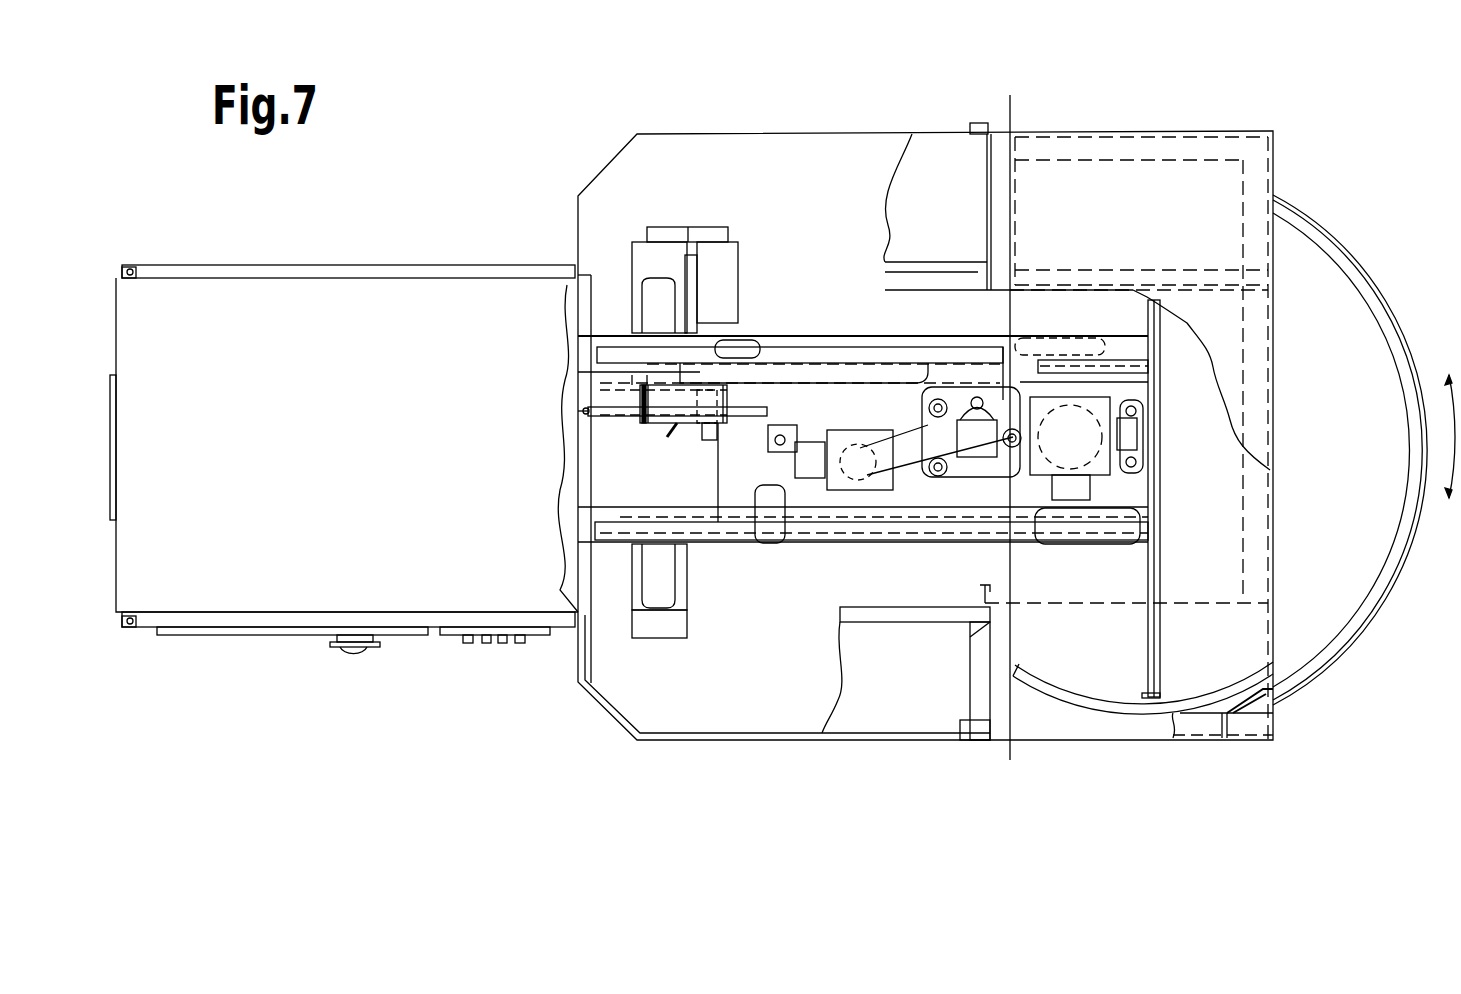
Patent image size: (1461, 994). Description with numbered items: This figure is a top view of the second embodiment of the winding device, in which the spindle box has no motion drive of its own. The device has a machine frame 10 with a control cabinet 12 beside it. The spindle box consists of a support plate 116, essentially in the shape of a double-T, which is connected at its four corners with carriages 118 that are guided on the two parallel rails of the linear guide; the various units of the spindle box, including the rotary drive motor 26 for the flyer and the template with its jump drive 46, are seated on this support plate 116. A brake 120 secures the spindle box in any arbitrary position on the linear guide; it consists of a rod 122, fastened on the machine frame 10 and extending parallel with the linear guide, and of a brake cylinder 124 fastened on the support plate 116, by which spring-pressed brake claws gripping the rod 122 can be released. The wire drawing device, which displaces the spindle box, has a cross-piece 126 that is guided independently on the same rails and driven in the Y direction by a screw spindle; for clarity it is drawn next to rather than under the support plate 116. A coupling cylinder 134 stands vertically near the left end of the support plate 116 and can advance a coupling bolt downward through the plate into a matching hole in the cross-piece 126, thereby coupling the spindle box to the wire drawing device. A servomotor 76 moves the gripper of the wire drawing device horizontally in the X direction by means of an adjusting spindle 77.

The machine frame 10 is at (632, 172).
The control cabinet 12 is at (252, 590).
The rotary drive motor 26 is at (1085, 448).
The jump drive 46 is at (868, 473).
The servomotor 76 is at (728, 262).
The adjusting spindle 77 is at (663, 573).
The support plate 116 is at (772, 480).
The carriages 118 is at (752, 340).
The brake 120 is at (678, 423).
The rod 122 is at (547, 442).
The brake cylinder 124 is at (705, 423).
The cross-piece 126 is at (668, 628).
The coupling cylinder 134 is at (783, 426).